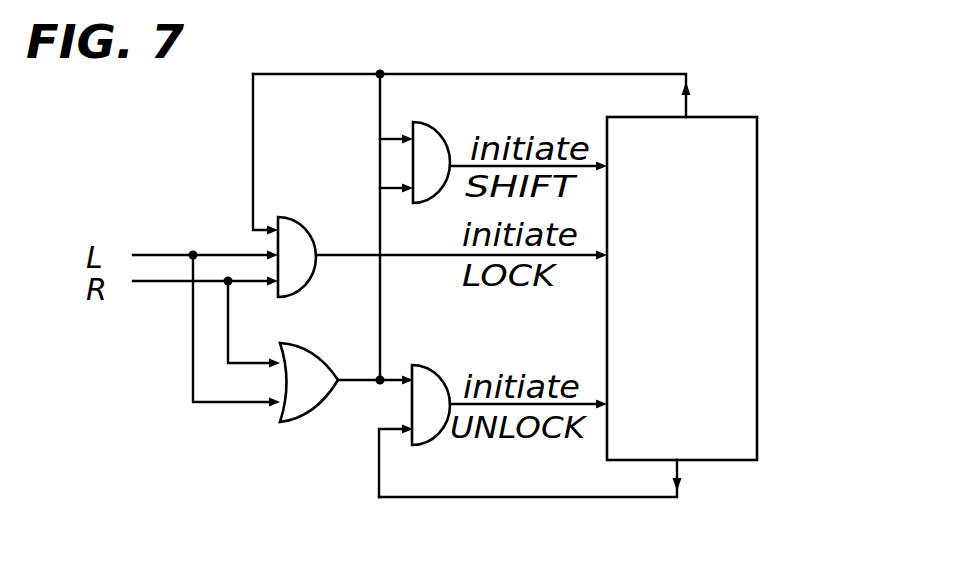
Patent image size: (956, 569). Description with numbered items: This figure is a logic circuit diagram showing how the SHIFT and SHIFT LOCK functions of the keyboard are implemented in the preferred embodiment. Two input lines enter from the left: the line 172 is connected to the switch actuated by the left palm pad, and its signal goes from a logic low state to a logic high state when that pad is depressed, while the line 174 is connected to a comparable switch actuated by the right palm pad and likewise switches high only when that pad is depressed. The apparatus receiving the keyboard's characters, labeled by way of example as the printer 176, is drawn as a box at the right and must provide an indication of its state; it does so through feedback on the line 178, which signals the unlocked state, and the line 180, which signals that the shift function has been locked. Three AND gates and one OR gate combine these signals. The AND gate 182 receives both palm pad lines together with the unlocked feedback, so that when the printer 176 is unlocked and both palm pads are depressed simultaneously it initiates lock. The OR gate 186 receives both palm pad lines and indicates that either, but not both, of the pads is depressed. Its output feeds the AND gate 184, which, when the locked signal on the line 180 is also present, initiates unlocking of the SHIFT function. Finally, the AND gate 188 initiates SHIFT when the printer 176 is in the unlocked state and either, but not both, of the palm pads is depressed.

The line 172 is at (183, 223).
The line 174 is at (176, 285).
The printer 176 is at (758, 243).
The line 178 is at (657, 73).
The line 180 is at (678, 495).
The AND gate 182 is at (282, 217).
The AND gate 184 is at (421, 365).
The OR gate 186 is at (291, 342).
The AND gate 188 is at (432, 121).